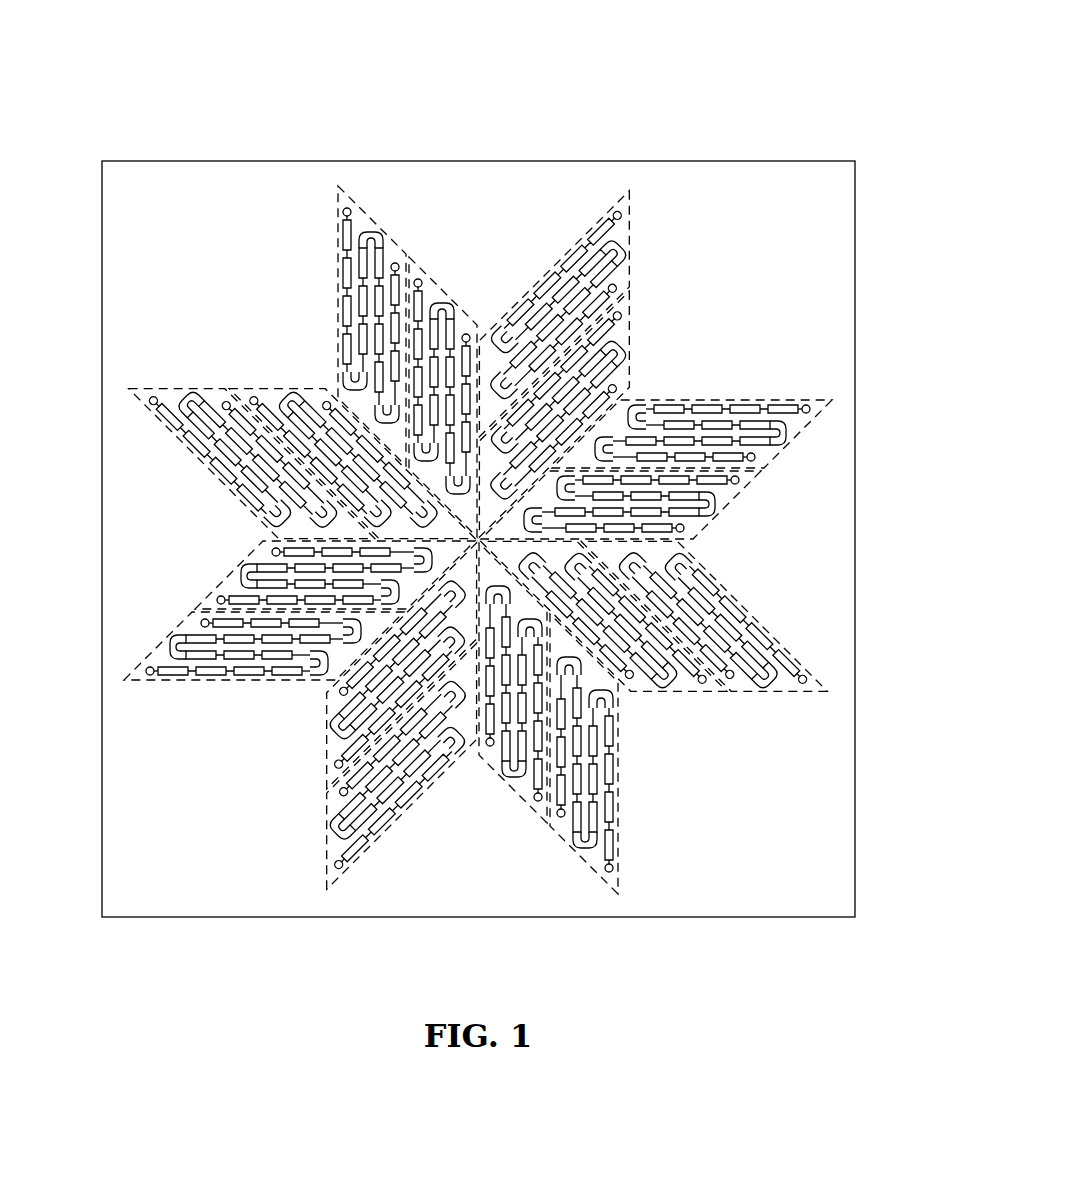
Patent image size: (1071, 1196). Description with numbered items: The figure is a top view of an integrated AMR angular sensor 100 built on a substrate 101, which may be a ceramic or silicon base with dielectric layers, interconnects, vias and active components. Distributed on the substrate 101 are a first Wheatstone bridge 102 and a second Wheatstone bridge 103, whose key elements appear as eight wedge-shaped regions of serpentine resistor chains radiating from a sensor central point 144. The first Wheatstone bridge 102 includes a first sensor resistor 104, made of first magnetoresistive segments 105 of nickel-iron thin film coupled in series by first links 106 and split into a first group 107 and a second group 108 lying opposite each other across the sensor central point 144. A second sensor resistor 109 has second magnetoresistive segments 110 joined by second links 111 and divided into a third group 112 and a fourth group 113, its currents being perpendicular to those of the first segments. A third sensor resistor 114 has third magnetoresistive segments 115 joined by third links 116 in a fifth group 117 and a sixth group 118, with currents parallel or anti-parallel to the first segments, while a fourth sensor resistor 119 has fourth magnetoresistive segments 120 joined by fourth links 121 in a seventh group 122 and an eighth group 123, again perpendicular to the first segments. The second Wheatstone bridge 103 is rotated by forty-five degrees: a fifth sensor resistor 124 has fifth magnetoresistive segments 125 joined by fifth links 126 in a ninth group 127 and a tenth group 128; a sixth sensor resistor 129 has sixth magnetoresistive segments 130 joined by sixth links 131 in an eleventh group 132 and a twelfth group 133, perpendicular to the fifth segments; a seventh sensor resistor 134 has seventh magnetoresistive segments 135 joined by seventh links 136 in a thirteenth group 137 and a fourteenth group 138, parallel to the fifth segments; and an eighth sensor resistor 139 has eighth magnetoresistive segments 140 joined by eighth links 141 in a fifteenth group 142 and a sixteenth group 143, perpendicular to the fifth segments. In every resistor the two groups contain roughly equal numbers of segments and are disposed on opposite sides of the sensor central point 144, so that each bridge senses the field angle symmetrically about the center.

The integrated AMR angular sensor 100 is at (681, 70).
The substrate 101 is at (190, 918).
The first Wheatstone bridge 102 is at (336, 208).
The second Wheatstone bridge 103 is at (636, 207).
The first sensor resistor 104 is at (362, 205).
The first magnetoresistive segments 105 is at (343, 232).
The first links 106 is at (343, 255).
The first group 107 is at (384, 212).
The second group 108 is at (547, 820).
The second sensor resistor 109 is at (803, 432).
The second magnetoresistive segments 110 is at (805, 412).
The second links 111 is at (762, 410).
The third group 112 is at (775, 460).
The fourth group 113 is at (192, 603).
The third sensor resistor 114 is at (432, 275).
The third magnetoresistive segments 115 is at (469, 328).
The third links 116 is at (465, 300).
The fifth group 117 is at (445, 288).
The sixth group 118 is at (590, 866).
The fourth sensor resistor 119 is at (749, 486).
The fourth magnetoresistive segments 120 is at (703, 530).
The fourth links 121 is at (720, 533).
The seventh group 122 is at (728, 522).
The eighth group 123 is at (147, 683).
The fifth sensor resistor 124 is at (635, 230).
The fifth magnetoresistive segments 125 is at (604, 208).
The fifth links 126 is at (540, 285).
The ninth group 127 is at (636, 252).
The tenth group 128 is at (324, 795).
The sixth sensor resistor 129 is at (247, 385).
The sixth magnetoresistive segments 130 is at (172, 410).
The sixth links 131 is at (213, 458).
The eleventh group 132 is at (788, 695).
The twelfth group 133 is at (293, 385).
The seventh sensor resistor 134 is at (636, 318).
The seventh magnetoresistive segments 135 is at (624, 386).
The seventh links 136 is at (628, 352).
The thirteenth group 137 is at (636, 365).
The fourteenth group 138 is at (324, 888).
The eighth sensor resistor 139 is at (142, 412).
The eighth magnetoresistive segments 140 is at (322, 398).
The eighth links 141 is at (283, 400).
The fifteenth group 142 is at (711, 695).
The sixteenth group 143 is at (172, 442).
The sensor central point 144 is at (470, 540).